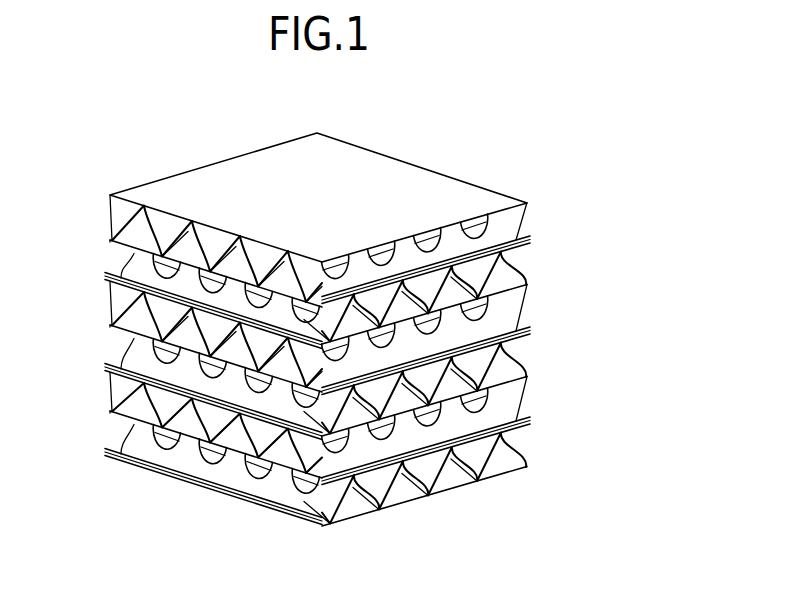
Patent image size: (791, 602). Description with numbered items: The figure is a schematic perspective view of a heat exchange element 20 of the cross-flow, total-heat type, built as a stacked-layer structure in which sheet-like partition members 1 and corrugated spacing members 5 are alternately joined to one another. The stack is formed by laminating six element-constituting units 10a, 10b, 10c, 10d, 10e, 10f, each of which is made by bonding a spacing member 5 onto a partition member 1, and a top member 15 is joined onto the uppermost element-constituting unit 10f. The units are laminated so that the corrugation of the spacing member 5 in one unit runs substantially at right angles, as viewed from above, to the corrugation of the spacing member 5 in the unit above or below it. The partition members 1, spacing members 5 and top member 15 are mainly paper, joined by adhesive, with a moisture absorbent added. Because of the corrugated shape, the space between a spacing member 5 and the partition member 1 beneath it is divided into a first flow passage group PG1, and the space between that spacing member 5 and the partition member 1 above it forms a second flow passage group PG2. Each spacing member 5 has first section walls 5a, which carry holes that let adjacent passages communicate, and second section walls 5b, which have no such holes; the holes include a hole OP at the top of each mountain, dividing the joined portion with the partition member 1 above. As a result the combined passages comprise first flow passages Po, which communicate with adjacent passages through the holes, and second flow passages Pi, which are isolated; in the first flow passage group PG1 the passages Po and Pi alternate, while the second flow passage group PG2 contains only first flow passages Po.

The heat exchange element 20 is at (508, 127).
The top member 15 is at (338, 152).
The partition member 1 is at (114, 241).
The spacing member 5 is at (121, 211).
The first section wall 5a is at (308, 268).
The second section wall 5b is at (163, 222).
The element-constituting unit 10a is at (132, 442).
The element-constituting unit 10b is at (506, 403).
The element-constituting unit 10c is at (134, 355).
The element-constituting unit 10d is at (506, 317).
The element-constituting unit 10e is at (135, 269).
The element-constituting unit 10f is at (506, 229).
The hole OP is at (168, 262).
The first flow passage Po is at (155, 430).
The second flow passage Pi is at (243, 450).
The first flow passage group PG1 is at (284, 472).
The second flow passage group PG2 is at (190, 449).